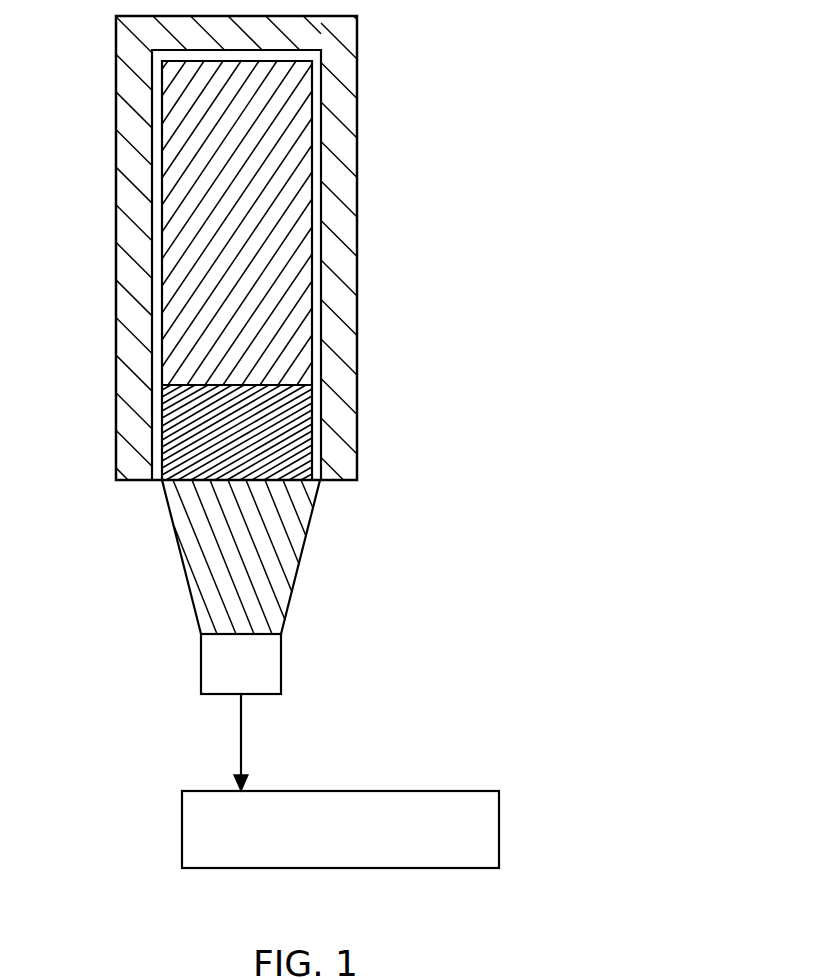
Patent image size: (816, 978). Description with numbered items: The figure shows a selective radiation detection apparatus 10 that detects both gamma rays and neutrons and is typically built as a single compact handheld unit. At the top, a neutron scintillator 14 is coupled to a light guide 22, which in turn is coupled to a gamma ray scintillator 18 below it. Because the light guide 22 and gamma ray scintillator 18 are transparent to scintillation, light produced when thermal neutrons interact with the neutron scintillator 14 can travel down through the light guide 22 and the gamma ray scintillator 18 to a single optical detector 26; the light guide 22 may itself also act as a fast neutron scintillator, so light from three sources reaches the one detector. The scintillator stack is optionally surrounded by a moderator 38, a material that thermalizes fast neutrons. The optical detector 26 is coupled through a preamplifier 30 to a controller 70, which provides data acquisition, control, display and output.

The selective radiation detection apparatus 10 is at (70, 692).
The neutron scintillator 14 is at (315, 157).
The gamma ray scintillator 18 is at (313, 393).
The light guide 22 is at (292, 260).
The optical detector 26 is at (277, 558).
The preamplifier 30 is at (273, 664).
The moderator 38 is at (350, 44).
The controller 70 is at (398, 797).